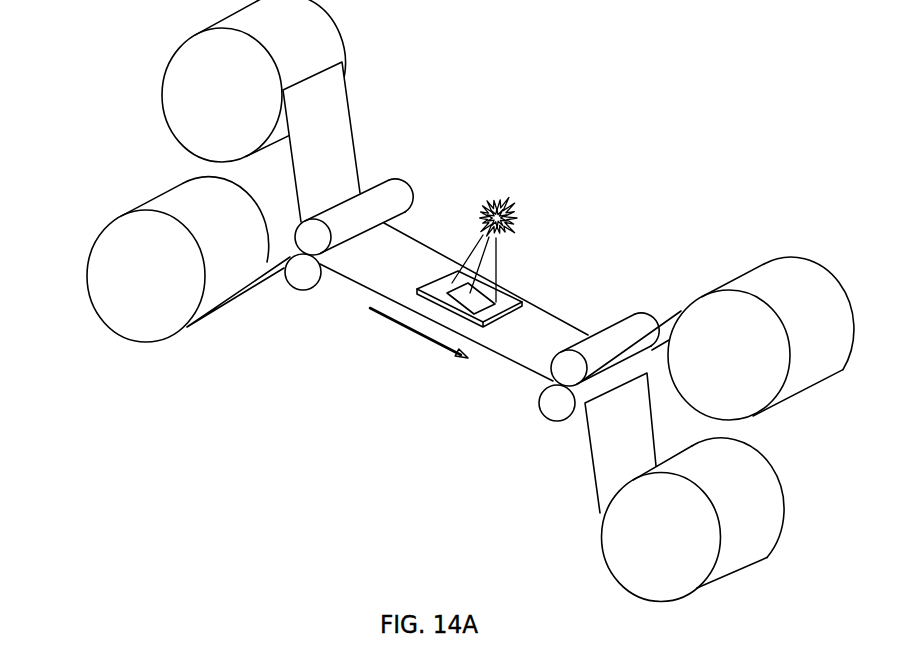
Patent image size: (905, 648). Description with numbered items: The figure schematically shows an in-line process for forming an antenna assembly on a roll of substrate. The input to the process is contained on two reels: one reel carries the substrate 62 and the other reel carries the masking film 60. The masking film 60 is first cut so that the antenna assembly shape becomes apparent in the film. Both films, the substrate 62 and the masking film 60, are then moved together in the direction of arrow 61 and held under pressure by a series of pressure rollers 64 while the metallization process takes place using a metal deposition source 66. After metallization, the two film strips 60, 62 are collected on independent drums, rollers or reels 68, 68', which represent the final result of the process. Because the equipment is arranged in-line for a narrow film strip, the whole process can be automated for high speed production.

The masking film 60 is at (178, 63).
The substrate 62 is at (106, 259).
The pressure rollers 64 is at (311, 272).
The arrow 61 is at (421, 334).
The metal deposition source 66 is at (500, 207).
The drum/roller/reel 68 is at (718, 337).
The drum/roller/reel 68' is at (651, 487).